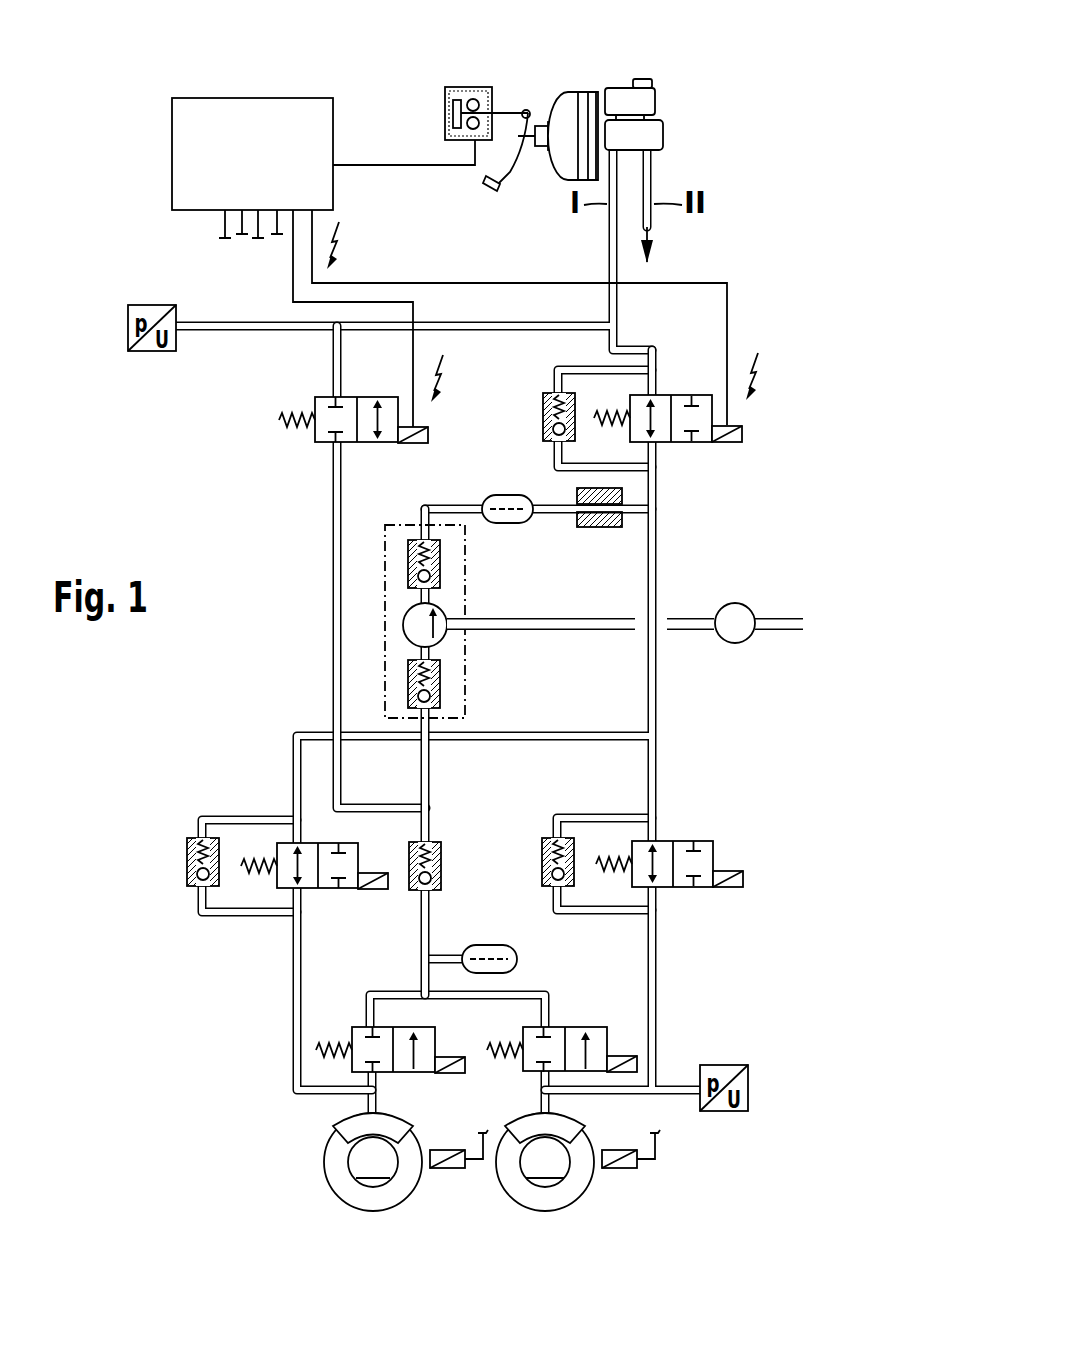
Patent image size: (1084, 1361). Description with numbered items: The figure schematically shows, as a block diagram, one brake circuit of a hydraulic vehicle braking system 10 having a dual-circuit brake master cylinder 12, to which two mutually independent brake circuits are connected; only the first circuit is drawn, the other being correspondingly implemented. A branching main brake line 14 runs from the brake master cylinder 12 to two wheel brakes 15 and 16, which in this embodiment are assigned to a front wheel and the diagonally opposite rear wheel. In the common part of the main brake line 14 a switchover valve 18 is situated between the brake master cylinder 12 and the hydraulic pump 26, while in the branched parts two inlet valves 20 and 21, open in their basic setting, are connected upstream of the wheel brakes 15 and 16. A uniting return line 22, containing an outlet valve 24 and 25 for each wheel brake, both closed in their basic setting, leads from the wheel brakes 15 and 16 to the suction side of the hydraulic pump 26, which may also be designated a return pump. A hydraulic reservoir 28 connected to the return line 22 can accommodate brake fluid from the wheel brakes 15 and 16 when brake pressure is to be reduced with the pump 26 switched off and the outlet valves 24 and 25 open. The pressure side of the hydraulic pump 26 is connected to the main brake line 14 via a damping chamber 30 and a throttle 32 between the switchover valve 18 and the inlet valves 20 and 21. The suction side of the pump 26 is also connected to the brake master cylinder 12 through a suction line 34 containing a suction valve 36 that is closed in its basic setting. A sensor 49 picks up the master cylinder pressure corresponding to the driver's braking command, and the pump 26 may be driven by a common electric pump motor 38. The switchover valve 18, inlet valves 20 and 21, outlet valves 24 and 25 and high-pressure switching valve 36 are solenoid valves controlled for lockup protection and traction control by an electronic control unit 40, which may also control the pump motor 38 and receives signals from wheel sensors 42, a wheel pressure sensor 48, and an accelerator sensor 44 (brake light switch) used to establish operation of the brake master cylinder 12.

The hydraulic vehicle braking system 10 is at (765, 91).
The brake master cylinder 12 is at (650, 139).
The main brake line 14 is at (550, 732).
The wheel brake 15 is at (385, 1122).
The wheel brake 16 is at (528, 1122).
The switchover valve 18 is at (680, 438).
The inlet valve 20 is at (325, 880).
The inlet valve 21 is at (680, 880).
The return line 22 is at (420, 931).
The outlet valve 24 is at (360, 1030).
The outlet valve 25 is at (600, 1027).
The hydraulic pump 26 is at (465, 565).
The hydraulic reservoir 28 is at (505, 956).
The damping chamber 30 is at (507, 498).
The throttle 32 is at (597, 527).
The suction line 34 is at (332, 376).
The suction valve 36 is at (320, 445).
The electric pump motor 38 is at (728, 604).
The electronic control unit 40 is at (210, 115).
The wheel sensor 42 is at (458, 1170).
The accelerator sensor (brake light switch) 44 is at (462, 87).
The wheel pressure sensor 48 is at (727, 1065).
The sensor 49 is at (155, 305).